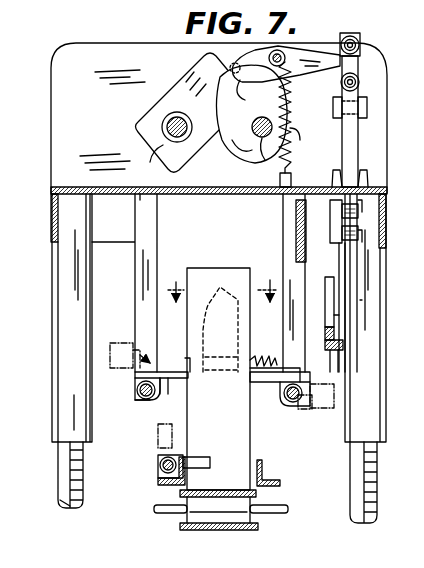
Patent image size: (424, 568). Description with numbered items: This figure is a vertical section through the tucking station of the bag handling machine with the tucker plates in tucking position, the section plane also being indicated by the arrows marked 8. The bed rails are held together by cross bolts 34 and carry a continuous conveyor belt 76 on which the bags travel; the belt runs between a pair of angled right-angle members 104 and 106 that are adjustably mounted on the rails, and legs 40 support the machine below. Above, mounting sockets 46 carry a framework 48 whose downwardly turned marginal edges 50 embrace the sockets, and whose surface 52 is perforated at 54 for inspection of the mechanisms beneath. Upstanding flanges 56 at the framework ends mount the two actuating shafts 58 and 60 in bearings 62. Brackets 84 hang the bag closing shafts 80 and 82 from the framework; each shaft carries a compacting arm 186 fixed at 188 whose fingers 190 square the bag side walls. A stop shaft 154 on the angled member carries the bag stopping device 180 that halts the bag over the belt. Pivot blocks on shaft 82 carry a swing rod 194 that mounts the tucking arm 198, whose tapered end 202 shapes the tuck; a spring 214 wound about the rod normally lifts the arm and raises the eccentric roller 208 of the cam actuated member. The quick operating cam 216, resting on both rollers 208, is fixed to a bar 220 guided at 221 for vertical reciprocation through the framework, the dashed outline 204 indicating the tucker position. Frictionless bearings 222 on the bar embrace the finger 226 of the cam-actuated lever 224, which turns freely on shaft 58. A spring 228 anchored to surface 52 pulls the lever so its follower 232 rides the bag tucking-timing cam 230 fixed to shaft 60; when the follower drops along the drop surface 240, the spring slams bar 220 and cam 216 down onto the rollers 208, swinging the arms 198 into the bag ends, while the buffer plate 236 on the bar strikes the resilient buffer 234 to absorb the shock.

The section line 8- 8 is at (223, 293).
The cross bolt 34 is at (163, 513).
The leg 40 is at (60, 485).
The mounting socket 46 is at (55, 310).
The framework 48 is at (50, 128).
The marginal edge 50 is at (52, 218).
The surface 52 is at (60, 187).
The perforation 54 is at (163, 195).
The upstanding flange 56 is at (118, 48).
The actuating shaft 58 is at (160, 124).
The actuating shaft 60 is at (246, 146).
The bearing 62 is at (229, 151).
The conveyor belt 76 is at (250, 530).
The bag closing shaft 80 is at (137, 392).
The bag closing shaft 82 is at (293, 403).
The bracket 84 is at (158, 248).
The angled member 104 is at (160, 482).
The angled member 106 is at (266, 478).
The stop shaft 154 is at (158, 466).
The bag stopping device 180 is at (158, 440).
The compacting arm 186 is at (270, 407).
The mounting 188 is at (148, 400).
The finger 190 is at (120, 343).
The swing rod 194 is at (248, 380).
The tucking arm 198 is at (203, 318).
The tapered wall 202 is at (391, 307).
The plate 204 is at (230, 275).
The roller 208 is at (344, 344).
The spring 214 is at (262, 358).
The quick operating cam 216 is at (334, 292).
The cam actuating bar 220 is at (352, 262).
The guide 221 is at (320, 234).
The frictionless bearing 222 is at (361, 45).
The cam-actuated lever 224 is at (198, 86).
The finger 226 is at (360, 62).
The spring 228 is at (288, 98).
The bag tucking-timing cam 230 is at (252, 160).
The frictionless follower 232 is at (230, 67).
The buffer 234 is at (376, 176).
The buffer plate 236 is at (368, 108).
The drop surface 240 is at (256, 124).